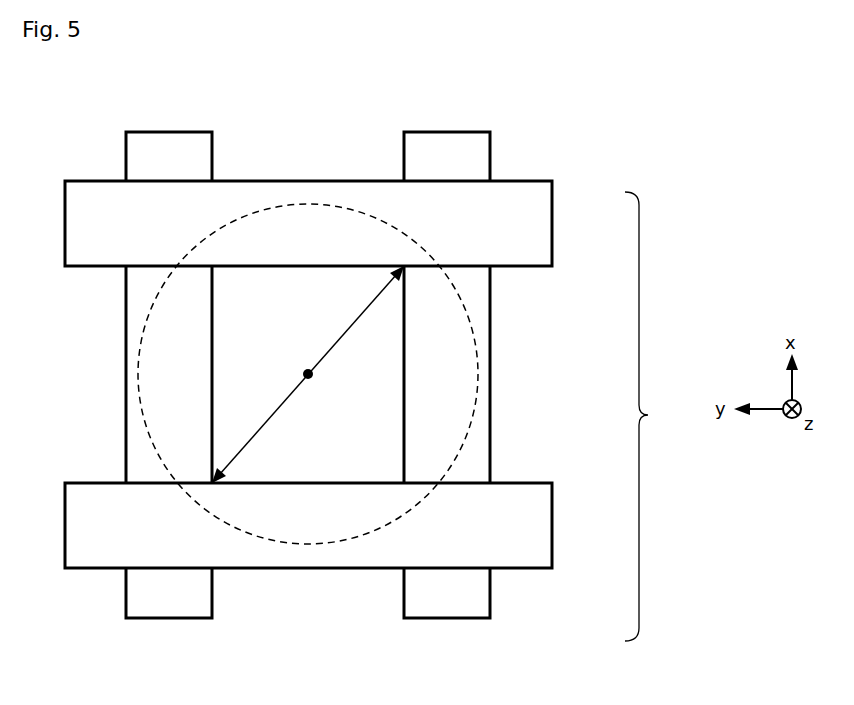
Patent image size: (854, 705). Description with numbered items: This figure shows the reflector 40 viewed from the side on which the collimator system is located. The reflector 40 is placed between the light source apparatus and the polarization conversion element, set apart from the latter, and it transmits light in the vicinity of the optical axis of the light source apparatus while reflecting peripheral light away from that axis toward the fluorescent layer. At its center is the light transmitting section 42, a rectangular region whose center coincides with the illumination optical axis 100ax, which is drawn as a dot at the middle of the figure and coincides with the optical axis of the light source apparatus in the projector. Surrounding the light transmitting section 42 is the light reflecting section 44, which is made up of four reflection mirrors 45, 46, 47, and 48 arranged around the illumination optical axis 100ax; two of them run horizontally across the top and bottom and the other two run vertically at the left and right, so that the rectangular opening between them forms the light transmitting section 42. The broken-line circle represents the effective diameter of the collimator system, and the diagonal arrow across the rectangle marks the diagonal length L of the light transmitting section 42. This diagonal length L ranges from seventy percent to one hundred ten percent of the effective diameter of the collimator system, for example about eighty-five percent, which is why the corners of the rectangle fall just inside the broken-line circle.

The reflector 40 is at (617, 87).
The light transmitting section 42 is at (228, 372).
The light reflecting section 44 is at (653, 416).
The reflection mirror 45 is at (552, 222).
The reflection mirror 46 is at (552, 528).
The reflection mirror 47 is at (490, 360).
The reflection mirror 48 is at (167, 618).
The diagonal length L is at (350, 322).
The illumination optical axis 100ax is at (305, 368).